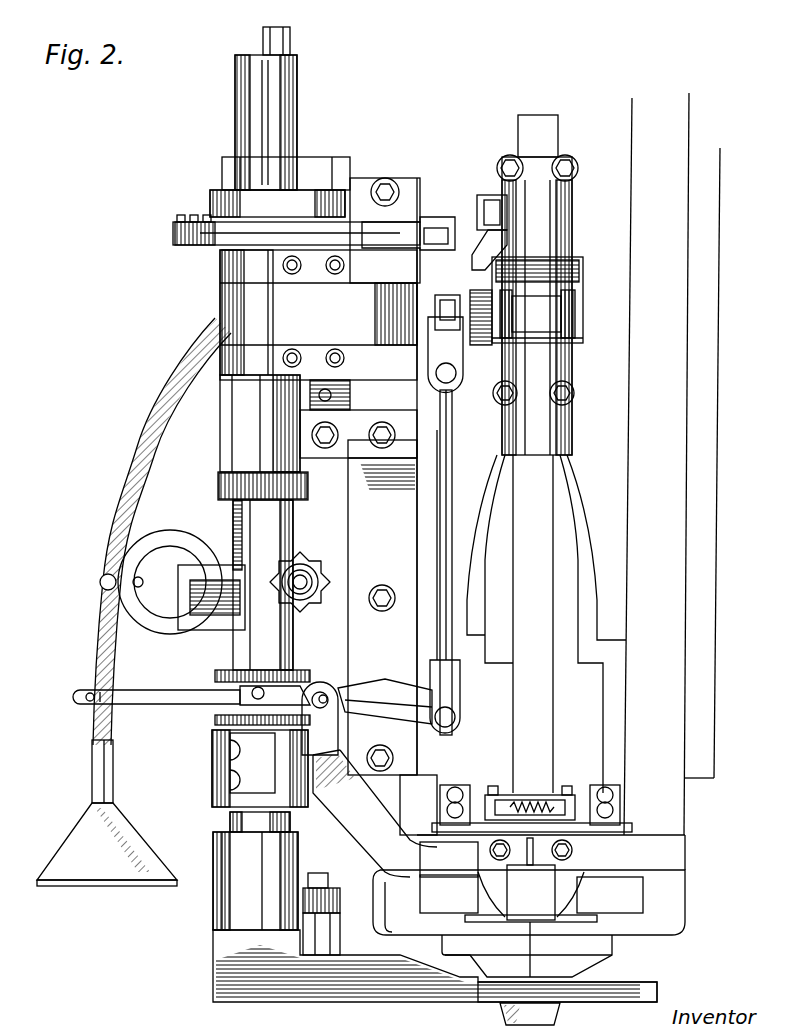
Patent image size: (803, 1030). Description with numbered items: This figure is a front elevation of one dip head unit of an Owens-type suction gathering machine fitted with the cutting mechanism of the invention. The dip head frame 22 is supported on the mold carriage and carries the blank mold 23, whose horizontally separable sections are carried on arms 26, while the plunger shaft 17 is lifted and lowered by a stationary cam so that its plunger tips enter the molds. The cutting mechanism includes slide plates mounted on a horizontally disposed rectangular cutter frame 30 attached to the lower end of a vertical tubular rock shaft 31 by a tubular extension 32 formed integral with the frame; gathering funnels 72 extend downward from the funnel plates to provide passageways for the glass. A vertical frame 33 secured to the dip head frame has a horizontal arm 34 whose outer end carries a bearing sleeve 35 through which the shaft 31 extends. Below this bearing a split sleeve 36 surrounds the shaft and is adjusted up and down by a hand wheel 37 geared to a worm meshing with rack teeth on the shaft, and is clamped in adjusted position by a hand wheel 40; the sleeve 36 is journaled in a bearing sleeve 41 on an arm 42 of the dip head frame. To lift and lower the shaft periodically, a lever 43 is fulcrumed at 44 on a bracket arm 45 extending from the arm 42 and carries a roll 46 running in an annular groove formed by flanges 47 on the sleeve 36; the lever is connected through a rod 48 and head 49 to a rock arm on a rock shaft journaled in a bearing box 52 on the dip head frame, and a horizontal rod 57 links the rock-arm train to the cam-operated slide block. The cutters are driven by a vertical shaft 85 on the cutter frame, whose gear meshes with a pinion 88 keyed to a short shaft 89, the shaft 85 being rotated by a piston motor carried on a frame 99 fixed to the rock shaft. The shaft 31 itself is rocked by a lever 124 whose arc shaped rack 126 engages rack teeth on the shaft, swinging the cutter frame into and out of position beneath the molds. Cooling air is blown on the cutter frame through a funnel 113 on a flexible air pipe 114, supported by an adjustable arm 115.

The plunger shaft 17 is at (535, 592).
The dip head frame 22 is at (670, 572).
The blank mold 23 is at (565, 963).
The arms 26 is at (668, 902).
The cutter frame 30 is at (608, 1000).
The rock shaft 31 is at (280, 96).
The tubular extension 32 is at (232, 900).
The vertical frame 33 is at (362, 520).
The horizontal arm 34 is at (376, 290).
The bearing sleeve 35 is at (240, 292).
The sleeve 36 is at (290, 640).
The hand wheel 37 is at (162, 530).
The hand wheel 40 is at (320, 568).
The bearing sleeve 41 is at (228, 744).
The arm 42 is at (365, 846).
The lever 43 is at (365, 690).
The fulcrum 44 is at (318, 696).
The bracket arm 45 is at (326, 694).
The roll 46 is at (214, 688).
The flanges 47 is at (214, 666).
The rod 48 is at (450, 446).
The head 49 is at (456, 366).
The bearing box 52 is at (576, 332).
The horizontal rod 57 is at (490, 196).
The gathering funnel 72 is at (512, 1012).
The vertical shaft 85 is at (276, 42).
The pinion 88 is at (338, 890).
The short shaft 89 is at (318, 872).
The frame 99 is at (238, 486).
The funnel 113 is at (92, 832).
The flexible air pipe 114 is at (136, 450).
The adjustable arm 115 is at (172, 704).
The lever 124 is at (370, 242).
The arc shaped rack 126 is at (176, 228).